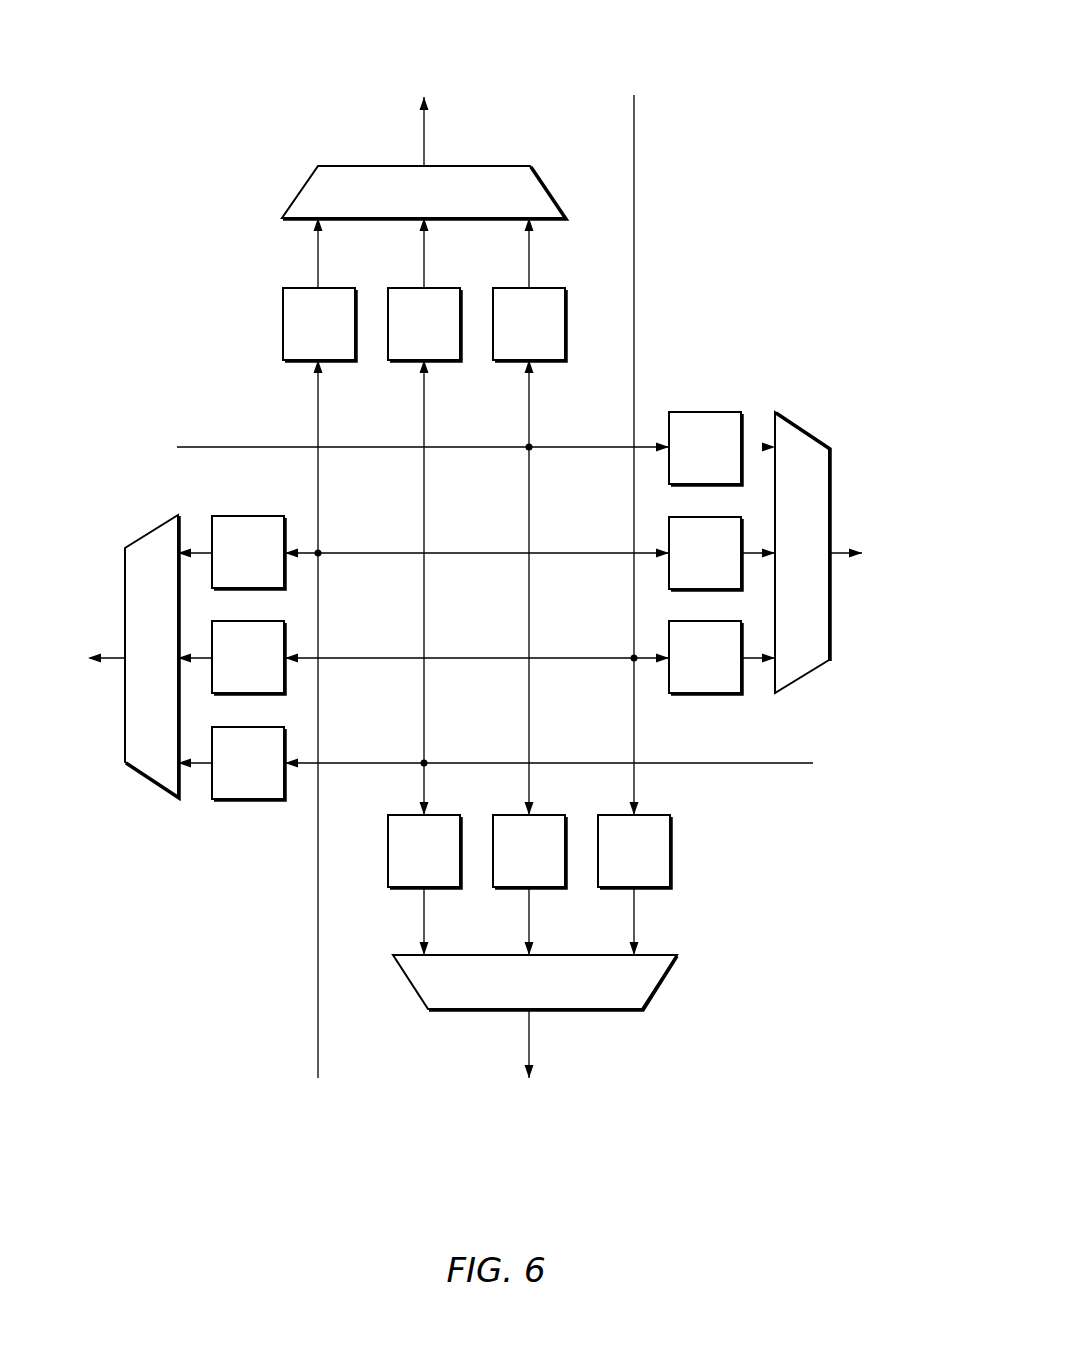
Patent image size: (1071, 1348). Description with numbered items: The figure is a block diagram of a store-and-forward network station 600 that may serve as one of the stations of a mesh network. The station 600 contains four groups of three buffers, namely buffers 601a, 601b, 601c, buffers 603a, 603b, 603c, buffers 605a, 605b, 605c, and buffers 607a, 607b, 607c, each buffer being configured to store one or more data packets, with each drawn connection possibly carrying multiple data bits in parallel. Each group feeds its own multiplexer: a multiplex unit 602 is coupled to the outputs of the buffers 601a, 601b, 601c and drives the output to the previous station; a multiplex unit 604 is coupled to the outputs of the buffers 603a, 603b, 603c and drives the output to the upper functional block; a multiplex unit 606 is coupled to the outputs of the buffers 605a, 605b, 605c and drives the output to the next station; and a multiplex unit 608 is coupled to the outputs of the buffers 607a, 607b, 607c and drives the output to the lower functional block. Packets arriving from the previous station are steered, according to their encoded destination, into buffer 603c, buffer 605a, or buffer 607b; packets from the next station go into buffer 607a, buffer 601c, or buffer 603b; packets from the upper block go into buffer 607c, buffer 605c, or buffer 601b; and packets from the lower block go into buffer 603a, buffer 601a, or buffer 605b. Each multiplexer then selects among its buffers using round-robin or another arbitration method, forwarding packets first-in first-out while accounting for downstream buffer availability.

The station 600 is at (90, 68).
The buffer 601a is at (268, 565).
The buffer 601b is at (268, 670).
The buffer 601c is at (268, 776).
The multiplex unit 602 is at (133, 663).
The buffer 603a is at (339, 337).
The buffer 603b is at (444, 337).
The buffer 603c is at (549, 337).
The multiplex unit 604 is at (404, 203).
The buffer 605a is at (725, 461).
The buffer 605b is at (725, 566).
The buffer 605c is at (725, 670).
The multiplex unit 606 is at (784, 563).
The buffer 607a is at (444, 864).
The buffer 607b is at (549, 864).
The buffer 607c is at (654, 864).
The multiplex unit 608 is at (509, 993).